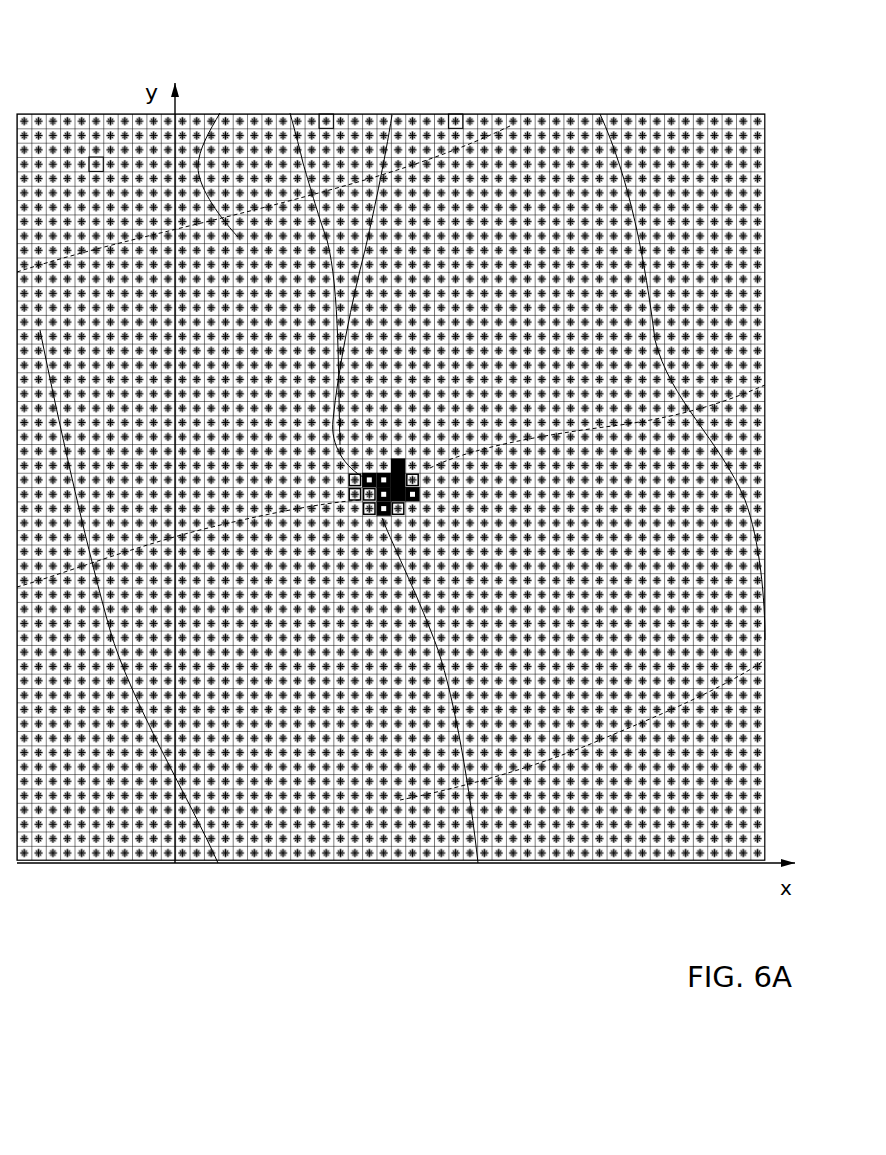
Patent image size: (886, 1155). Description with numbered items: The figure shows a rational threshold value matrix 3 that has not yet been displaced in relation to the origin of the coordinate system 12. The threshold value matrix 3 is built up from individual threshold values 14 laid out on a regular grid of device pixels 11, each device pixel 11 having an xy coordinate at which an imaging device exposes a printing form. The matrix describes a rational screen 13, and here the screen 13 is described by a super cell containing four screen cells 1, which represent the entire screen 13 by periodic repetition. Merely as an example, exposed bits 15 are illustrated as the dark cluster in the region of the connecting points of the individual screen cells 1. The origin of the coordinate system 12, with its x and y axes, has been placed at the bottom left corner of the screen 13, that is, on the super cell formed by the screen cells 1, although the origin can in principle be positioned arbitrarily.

The screen cell 1 is at (220, 113).
The threshold value matrix 3 is at (512, 125).
The device pixel 11 is at (327, 110).
The coordinate system 12 is at (127, 72).
The screen 13 is at (94, 168).
The threshold value 14 is at (452, 122).
The exposed bit 15 is at (389, 115).